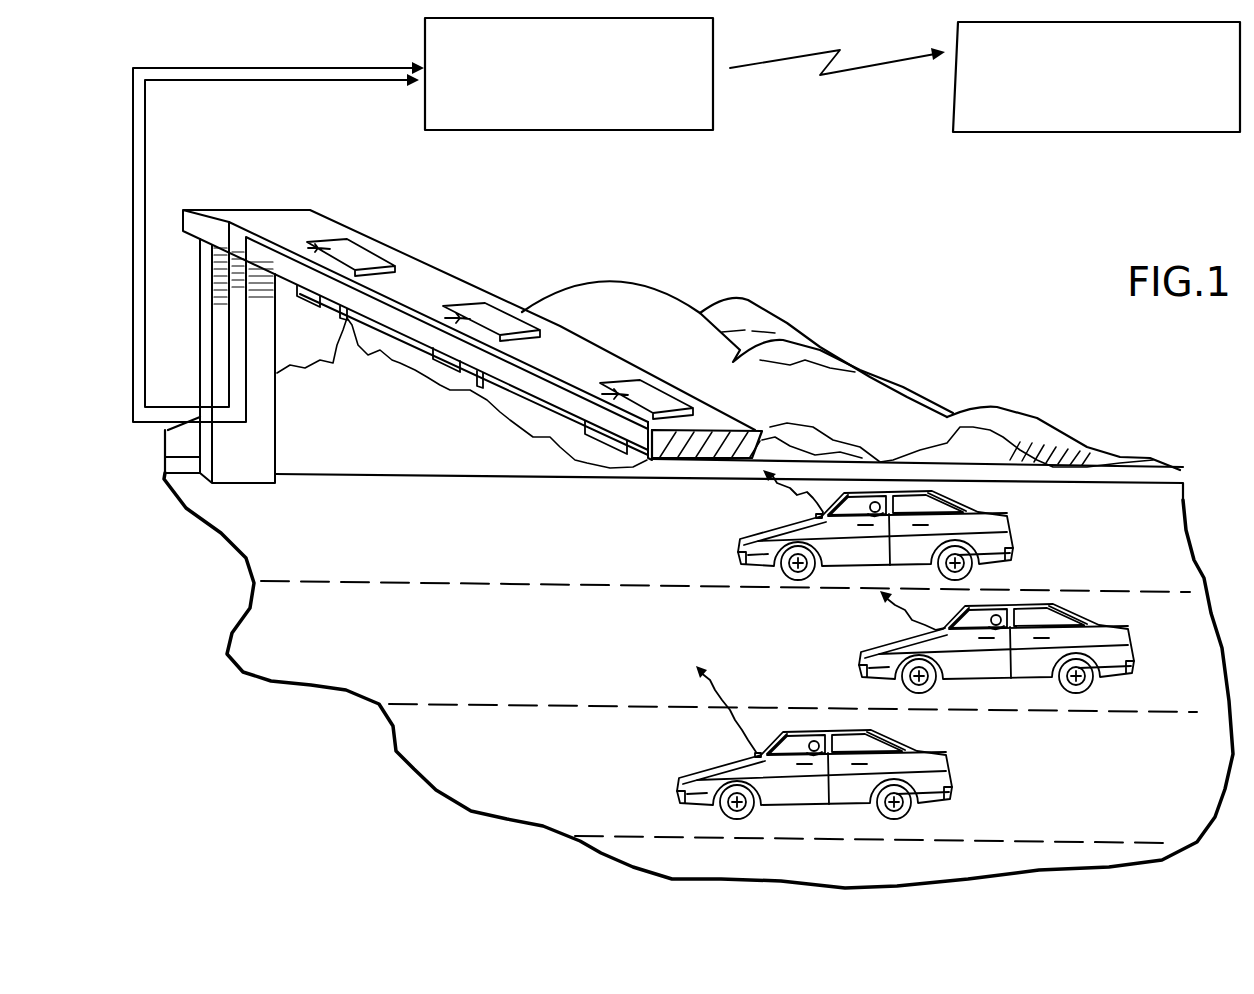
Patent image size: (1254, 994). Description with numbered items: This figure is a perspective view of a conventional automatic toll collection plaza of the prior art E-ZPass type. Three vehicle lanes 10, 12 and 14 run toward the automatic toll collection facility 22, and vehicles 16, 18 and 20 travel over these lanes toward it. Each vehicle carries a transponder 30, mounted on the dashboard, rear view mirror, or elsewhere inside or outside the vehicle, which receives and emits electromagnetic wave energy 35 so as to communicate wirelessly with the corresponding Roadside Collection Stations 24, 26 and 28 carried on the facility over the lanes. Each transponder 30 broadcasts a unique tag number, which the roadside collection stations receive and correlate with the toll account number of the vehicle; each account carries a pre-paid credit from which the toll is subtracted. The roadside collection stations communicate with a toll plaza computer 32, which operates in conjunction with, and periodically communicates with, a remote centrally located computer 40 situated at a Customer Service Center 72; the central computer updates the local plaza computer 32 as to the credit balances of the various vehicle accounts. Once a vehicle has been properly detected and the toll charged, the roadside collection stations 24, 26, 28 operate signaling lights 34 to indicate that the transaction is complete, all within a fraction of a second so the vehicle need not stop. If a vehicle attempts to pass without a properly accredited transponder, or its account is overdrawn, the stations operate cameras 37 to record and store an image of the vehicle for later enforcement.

The vehicle lane 10 is at (441, 765).
The vehicle lane 12 is at (332, 654).
The vehicle lane 14 is at (257, 531).
The vehicle 16 is at (947, 772).
The vehicle 18 is at (1128, 645).
The vehicle 20 is at (1020, 533).
The automatic toll collection facility 22 is at (461, 274).
The Roadside Collection Station 24 is at (633, 374).
The Roadside Collection Station 26 is at (510, 313).
The Roadside Collection Station 28 is at (377, 257).
The transponder 30 is at (812, 515).
The toll plaza computer 32 is at (557, 131).
The signaling light 34 is at (318, 304).
The electromagnetic wave energy 35 is at (782, 498).
The camera 37 is at (341, 320).
The central computer 40 is at (1158, 110).
The Customer Service Center 72 is at (1088, 137).